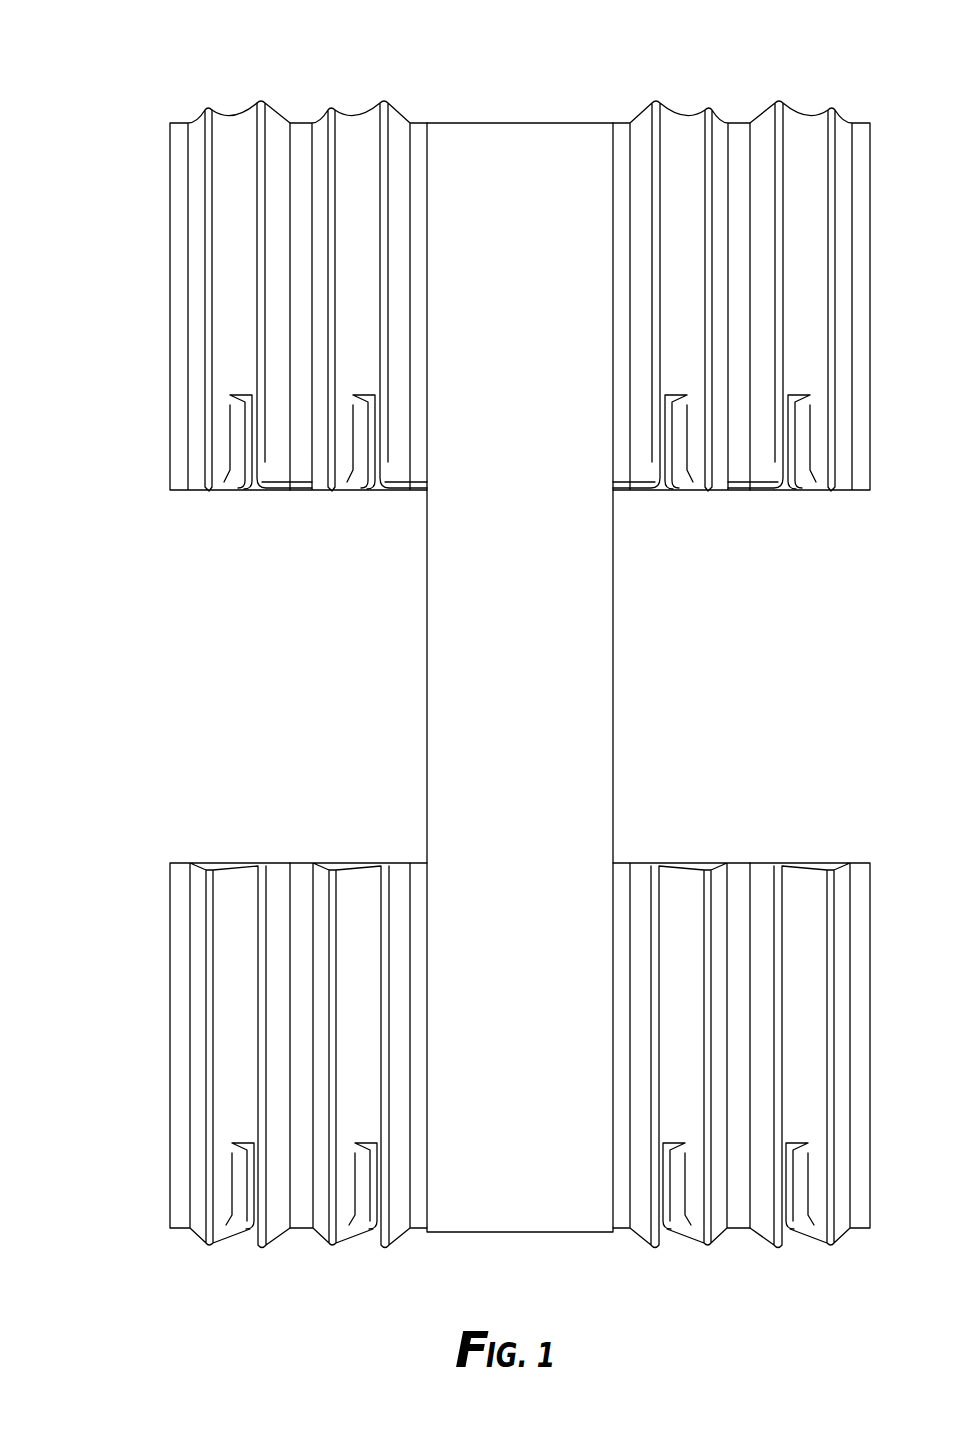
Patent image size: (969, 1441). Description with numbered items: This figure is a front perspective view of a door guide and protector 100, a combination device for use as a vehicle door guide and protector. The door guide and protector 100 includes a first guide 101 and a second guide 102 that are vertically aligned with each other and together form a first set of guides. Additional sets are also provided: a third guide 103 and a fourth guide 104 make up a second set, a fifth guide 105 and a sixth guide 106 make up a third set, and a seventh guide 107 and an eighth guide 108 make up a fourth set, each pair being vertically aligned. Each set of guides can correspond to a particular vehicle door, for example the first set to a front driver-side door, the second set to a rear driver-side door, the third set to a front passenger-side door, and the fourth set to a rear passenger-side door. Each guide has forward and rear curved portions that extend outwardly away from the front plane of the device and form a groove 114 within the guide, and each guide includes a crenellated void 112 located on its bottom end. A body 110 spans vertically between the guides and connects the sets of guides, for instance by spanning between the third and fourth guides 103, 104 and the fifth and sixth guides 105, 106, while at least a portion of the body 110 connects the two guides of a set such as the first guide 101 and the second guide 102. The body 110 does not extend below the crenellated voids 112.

The door guide and protector 100 is at (100, 60).
The first guide 101 is at (233, 308).
The second guide 102 is at (238, 1245).
The third guide 103 is at (352, 100).
The fourth guide 104 is at (365, 1245).
The fifth guide 105 is at (688, 103).
The sixth guide 106 is at (668, 1245).
The seventh guide 107 is at (815, 105).
The eighth guide 108 is at (797, 1245).
The body 110 is at (537, 621).
The crenellated void 112 is at (250, 492).
The groove 114 is at (232, 108).